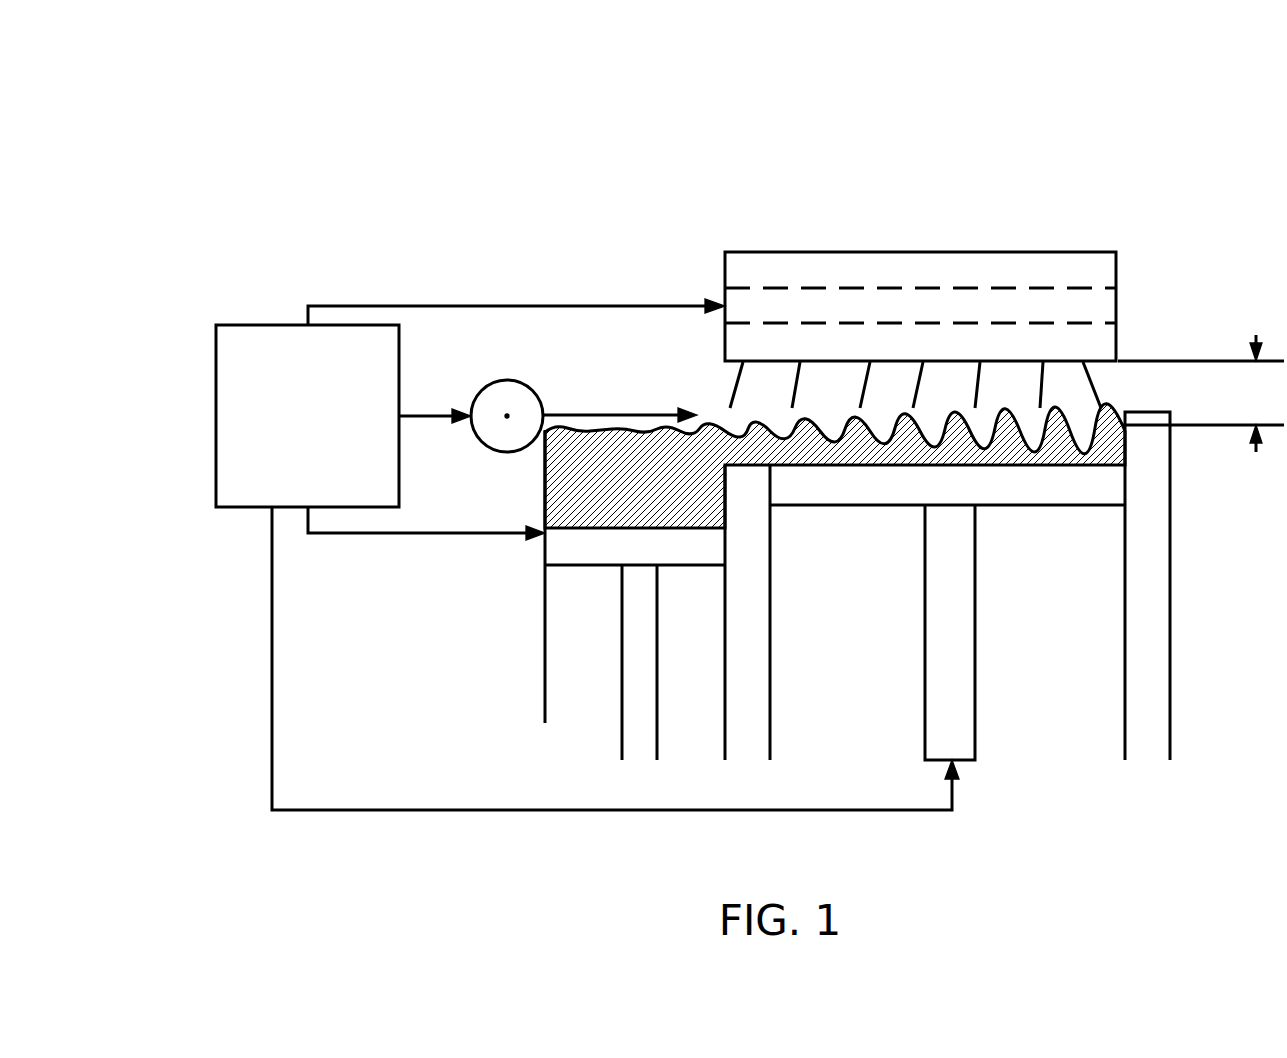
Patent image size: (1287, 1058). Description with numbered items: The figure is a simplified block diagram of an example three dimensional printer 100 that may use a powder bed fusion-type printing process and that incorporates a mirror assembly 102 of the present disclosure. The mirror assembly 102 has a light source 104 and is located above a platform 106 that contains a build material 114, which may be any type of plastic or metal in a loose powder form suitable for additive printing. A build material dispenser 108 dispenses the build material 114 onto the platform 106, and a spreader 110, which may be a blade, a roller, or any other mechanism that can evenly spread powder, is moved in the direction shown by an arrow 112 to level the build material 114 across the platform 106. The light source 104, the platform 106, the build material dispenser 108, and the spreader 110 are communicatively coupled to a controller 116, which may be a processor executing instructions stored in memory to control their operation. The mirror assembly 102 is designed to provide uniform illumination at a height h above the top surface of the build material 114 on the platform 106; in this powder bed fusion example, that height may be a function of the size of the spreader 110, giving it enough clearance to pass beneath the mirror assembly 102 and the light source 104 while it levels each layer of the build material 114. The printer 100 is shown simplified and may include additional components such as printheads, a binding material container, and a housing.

The three dimensional (3D) printer 100 is at (172, 44).
The mirror assembly 102 is at (1023, 252).
The light source 104 is at (1117, 305).
The platform 106 is at (1033, 508).
The build material dispenser 108 is at (583, 567).
The spreader 110 is at (502, 381).
The arrow 112 is at (625, 415).
The build material 114 is at (560, 455).
The controller 116 is at (327, 442).